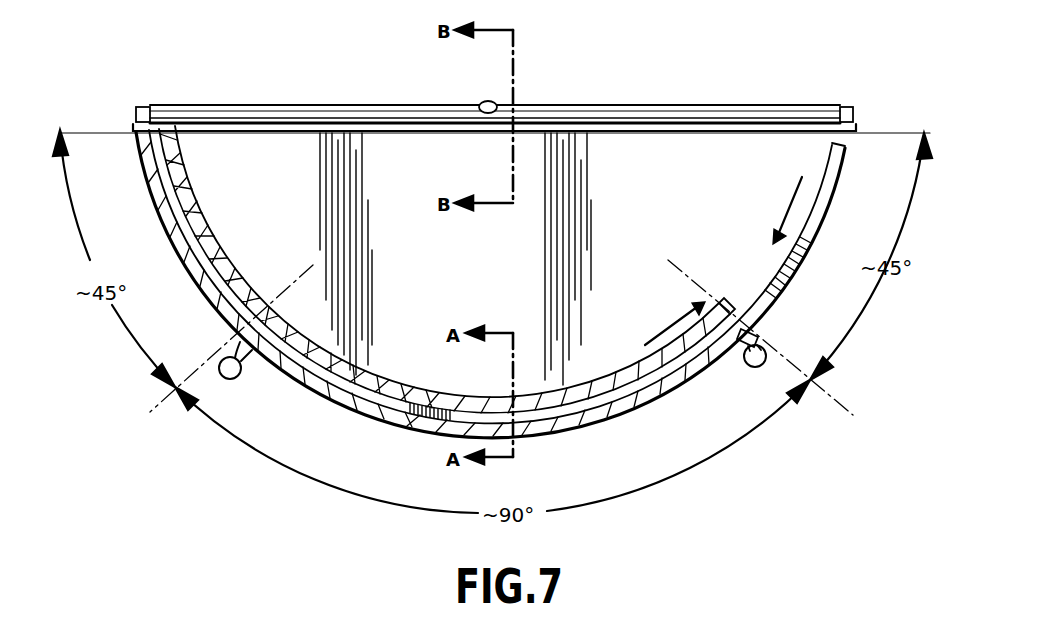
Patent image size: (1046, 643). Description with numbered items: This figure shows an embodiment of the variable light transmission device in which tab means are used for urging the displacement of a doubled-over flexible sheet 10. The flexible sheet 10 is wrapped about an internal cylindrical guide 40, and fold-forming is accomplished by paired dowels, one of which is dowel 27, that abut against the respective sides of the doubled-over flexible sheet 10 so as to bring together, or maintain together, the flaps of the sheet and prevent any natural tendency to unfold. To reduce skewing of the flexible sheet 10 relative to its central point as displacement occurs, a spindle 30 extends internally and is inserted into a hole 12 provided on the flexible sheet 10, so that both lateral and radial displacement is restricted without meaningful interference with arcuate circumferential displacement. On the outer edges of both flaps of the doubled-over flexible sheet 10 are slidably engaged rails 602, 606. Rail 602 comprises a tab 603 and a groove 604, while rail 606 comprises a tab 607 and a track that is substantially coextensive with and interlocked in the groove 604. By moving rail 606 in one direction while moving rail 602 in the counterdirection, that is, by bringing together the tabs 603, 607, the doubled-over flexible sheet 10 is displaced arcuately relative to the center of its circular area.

The flexible sheet 10 is at (673, 107).
The hole 12 is at (484, 118).
The dowel 27 is at (862, 133).
The spindle 30 is at (483, 101).
The internal cylindrical guide 40 is at (849, 108).
The rail 602 is at (532, 400).
The tab 603 is at (242, 380).
The groove 604 is at (195, 225).
The rail 606 is at (367, 393).
The tab 607 is at (762, 370).